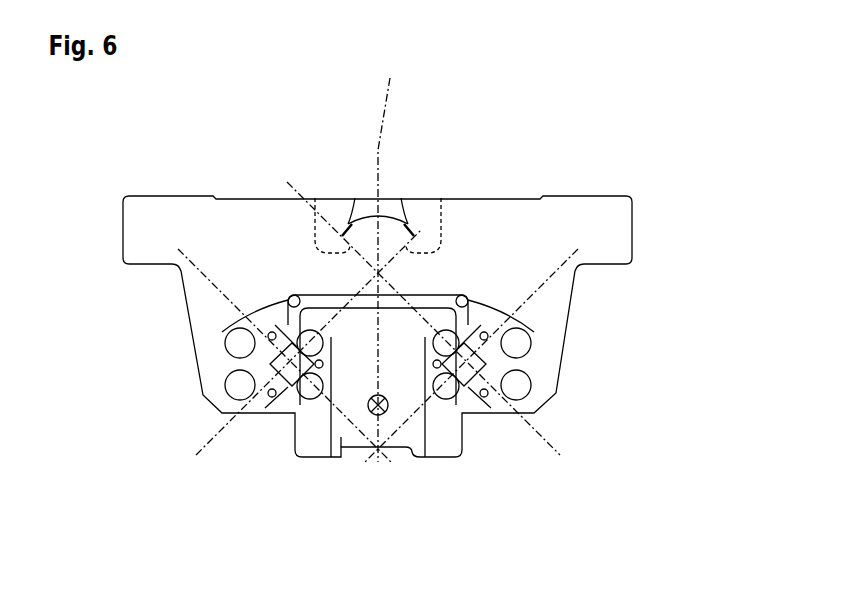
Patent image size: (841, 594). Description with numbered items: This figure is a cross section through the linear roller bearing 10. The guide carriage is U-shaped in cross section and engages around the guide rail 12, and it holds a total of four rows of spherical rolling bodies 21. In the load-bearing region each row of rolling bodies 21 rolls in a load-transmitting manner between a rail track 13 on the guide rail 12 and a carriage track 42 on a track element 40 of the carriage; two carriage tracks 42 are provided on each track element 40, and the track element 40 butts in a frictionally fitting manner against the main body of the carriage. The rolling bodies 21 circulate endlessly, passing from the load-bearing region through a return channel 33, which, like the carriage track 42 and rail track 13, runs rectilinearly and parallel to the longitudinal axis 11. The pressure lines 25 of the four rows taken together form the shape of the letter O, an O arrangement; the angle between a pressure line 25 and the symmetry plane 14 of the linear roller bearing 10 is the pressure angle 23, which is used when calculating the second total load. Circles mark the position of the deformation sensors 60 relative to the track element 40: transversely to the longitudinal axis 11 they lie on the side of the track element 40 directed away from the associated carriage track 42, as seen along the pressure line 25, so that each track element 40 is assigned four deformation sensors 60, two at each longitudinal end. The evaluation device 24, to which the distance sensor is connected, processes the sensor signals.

The linear roller bearing 10 is at (620, 148).
The longitudinal axis 11 is at (386, 413).
The guide rail 12 is at (345, 448).
The rail track 13 is at (460, 413).
The symmetry plane 14 is at (393, 255).
The rolling bodies 21 is at (468, 402).
The pressure angle 23 is at (401, 198).
The evaluation device 24 is at (370, 462).
The pressure lines 25 is at (441, 198).
The return channel 33 is at (516, 385).
The track element 40 is at (484, 365).
The carriage track 42 is at (431, 418).
The deformation sensors 60 is at (506, 410).